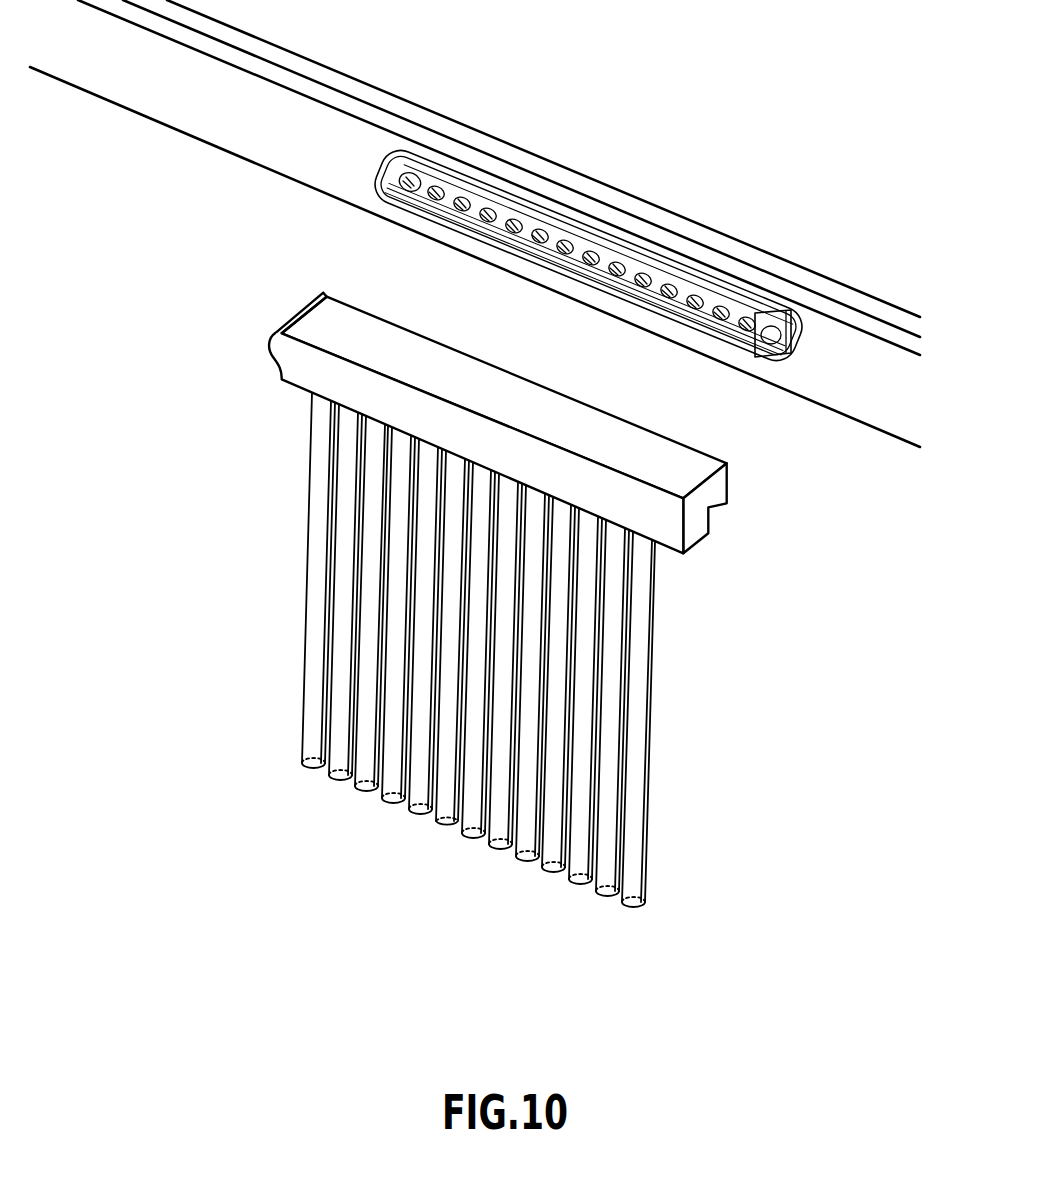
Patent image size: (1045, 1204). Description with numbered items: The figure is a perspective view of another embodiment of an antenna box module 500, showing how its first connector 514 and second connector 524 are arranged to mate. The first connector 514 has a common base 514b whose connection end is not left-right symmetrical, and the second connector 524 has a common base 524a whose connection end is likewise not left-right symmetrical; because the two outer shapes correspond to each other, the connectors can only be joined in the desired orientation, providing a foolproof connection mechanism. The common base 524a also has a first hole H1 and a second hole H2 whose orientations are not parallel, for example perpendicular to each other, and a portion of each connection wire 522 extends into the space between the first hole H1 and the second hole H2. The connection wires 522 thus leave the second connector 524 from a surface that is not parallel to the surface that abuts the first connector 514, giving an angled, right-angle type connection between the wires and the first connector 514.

The antenna box module 500 is at (493, 486).
The first connector 514 is at (663, 329).
The common base of the first connector 514b is at (753, 330).
The connection wires 522 is at (320, 452).
The second connector 524 is at (467, 391).
The common base of the second connector 524a is at (452, 358).
The first hole H1 is at (677, 436).
The second hole H2 is at (670, 553).